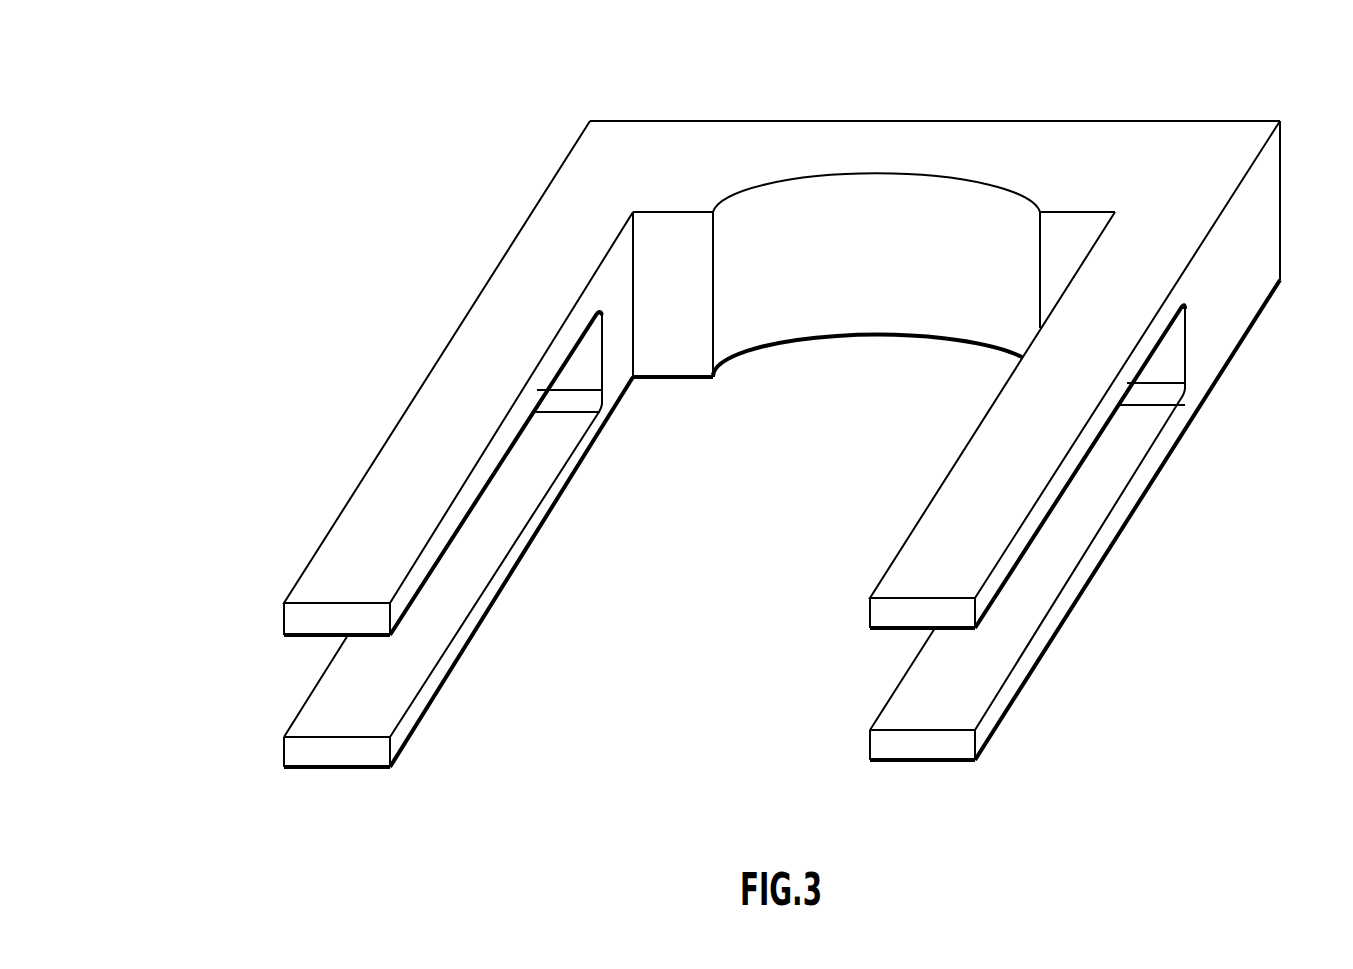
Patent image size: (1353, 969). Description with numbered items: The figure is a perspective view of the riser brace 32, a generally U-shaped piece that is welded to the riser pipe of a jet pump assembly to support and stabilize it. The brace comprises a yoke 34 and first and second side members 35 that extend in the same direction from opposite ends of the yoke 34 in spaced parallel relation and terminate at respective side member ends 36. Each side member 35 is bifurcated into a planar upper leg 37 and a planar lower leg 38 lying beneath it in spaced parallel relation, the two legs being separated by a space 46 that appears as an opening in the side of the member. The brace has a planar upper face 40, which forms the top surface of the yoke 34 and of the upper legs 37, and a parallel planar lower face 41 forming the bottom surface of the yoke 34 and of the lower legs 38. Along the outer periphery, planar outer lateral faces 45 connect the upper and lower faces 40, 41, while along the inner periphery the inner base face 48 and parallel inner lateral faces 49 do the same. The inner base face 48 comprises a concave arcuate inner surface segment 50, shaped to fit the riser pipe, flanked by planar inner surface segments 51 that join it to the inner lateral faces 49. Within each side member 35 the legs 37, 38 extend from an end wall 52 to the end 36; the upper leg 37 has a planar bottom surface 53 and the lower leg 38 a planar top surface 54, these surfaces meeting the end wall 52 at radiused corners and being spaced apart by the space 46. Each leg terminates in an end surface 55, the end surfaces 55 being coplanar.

The riser brace 32 is at (475, 153).
The yoke 34 is at (940, 147).
The side member 35 is at (391, 414).
The side member end 36 is at (298, 770).
The upper leg 37 is at (296, 582).
The lower leg 38 is at (296, 716).
The upper face 40 is at (1212, 158).
The lower face 41 is at (369, 771).
The outer lateral face 45 is at (1255, 236).
The space 46 is at (440, 582).
The inner base face 48 is at (833, 222).
The inner lateral face 49 is at (547, 508).
The arcuate inner surface segment 50 is at (897, 297).
The planar inner surface segment 51 is at (697, 243).
The end wall 52 is at (582, 360).
The bottom surface 53 is at (480, 493).
The top surface 54 is at (382, 697).
The end surface 55 is at (309, 610).